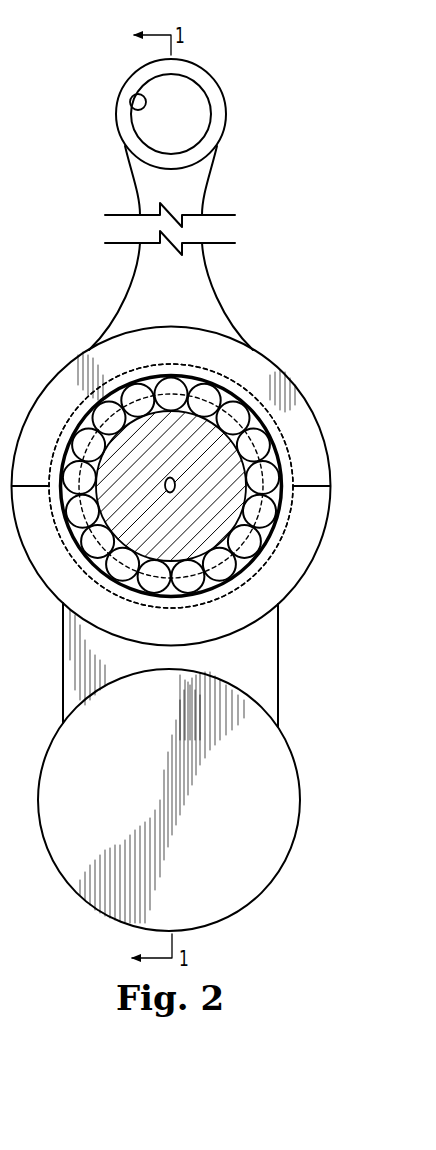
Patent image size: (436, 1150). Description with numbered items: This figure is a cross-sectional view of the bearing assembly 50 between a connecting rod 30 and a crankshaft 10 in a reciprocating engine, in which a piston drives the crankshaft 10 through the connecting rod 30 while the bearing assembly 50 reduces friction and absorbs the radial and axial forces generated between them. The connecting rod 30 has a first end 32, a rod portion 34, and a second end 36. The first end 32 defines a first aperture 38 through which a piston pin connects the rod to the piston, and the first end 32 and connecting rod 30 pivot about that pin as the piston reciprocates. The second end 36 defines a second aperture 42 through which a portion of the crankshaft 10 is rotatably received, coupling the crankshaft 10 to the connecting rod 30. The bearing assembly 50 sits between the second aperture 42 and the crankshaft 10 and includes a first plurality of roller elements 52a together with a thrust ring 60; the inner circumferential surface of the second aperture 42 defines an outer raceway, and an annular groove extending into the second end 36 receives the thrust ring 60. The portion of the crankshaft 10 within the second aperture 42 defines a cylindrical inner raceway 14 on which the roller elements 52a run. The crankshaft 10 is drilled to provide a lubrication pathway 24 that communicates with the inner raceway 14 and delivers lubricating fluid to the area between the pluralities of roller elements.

The crankshaft 10 is at (58, 693).
The inner raceway 14 is at (182, 470).
The lubrication pathway 24 is at (174, 481).
The connecting rod 30 is at (179, 352).
The first end 32 is at (220, 92).
The rod portion 34 is at (202, 200).
The second end 36 is at (310, 565).
The first aperture 38 is at (136, 107).
The second aperture 42 is at (83, 565).
The bearing assembly 50 is at (70, 402).
The first plurality of roller elements 52a is at (120, 373).
The thrust ring 60 is at (235, 377).